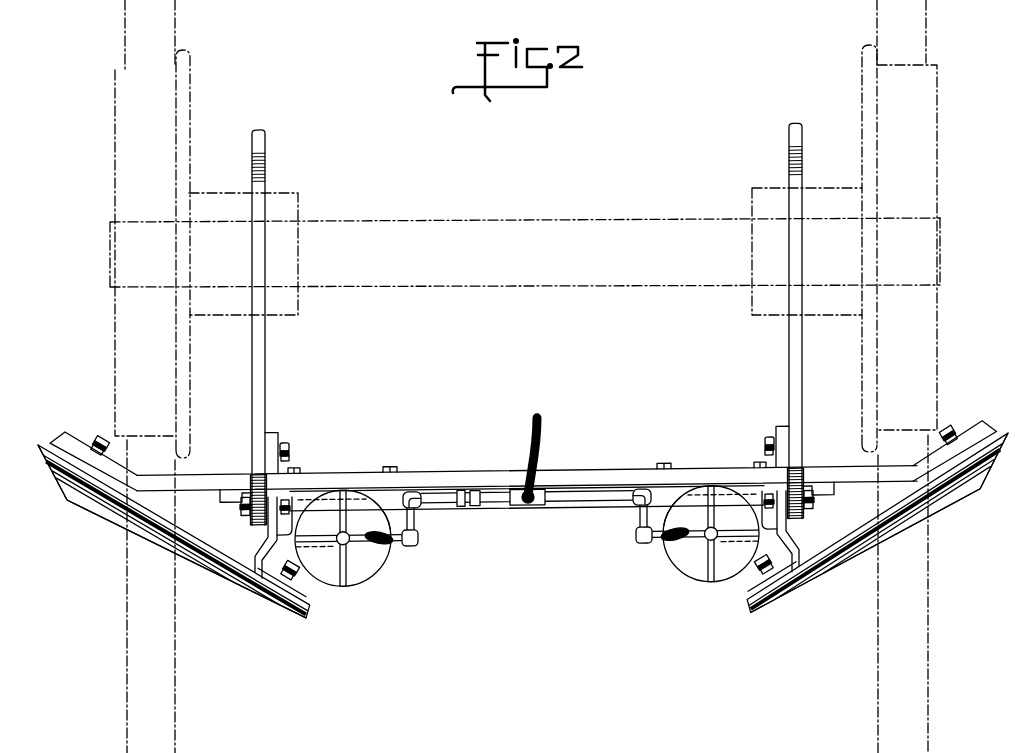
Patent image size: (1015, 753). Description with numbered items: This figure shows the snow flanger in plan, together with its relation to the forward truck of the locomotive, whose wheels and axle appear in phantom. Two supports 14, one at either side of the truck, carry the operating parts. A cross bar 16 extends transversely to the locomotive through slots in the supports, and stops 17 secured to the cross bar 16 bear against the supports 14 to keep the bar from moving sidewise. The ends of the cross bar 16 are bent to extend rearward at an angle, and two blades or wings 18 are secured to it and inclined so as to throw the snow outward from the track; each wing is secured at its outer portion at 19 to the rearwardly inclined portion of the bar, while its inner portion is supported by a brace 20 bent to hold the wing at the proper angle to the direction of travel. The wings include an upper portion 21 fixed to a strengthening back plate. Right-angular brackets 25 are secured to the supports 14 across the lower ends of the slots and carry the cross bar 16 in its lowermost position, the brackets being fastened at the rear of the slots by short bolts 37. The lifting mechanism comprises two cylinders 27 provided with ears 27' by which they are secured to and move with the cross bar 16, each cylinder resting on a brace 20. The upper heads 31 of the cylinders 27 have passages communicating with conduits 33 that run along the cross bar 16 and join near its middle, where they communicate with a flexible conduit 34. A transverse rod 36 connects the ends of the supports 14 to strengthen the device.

The supports 14 is at (260, 377).
The cross bar 16 is at (433, 472).
The stops 17 is at (229, 489).
The blades or wings 18 is at (85, 502).
The outer securing point of wings 19 is at (83, 436).
The braces 20 is at (263, 544).
The upper portion of wing 21 is at (208, 561).
The brackets 25 is at (278, 427).
The cylinders 27 is at (527, 541).
The ears 27' is at (530, 487).
The upper heads of the cylinders 31 is at (527, 536).
The conduits 33 is at (413, 516).
The flexible conduit 34 is at (533, 467).
The transverse rod 36 is at (503, 507).
The short bolts 37 is at (290, 451).